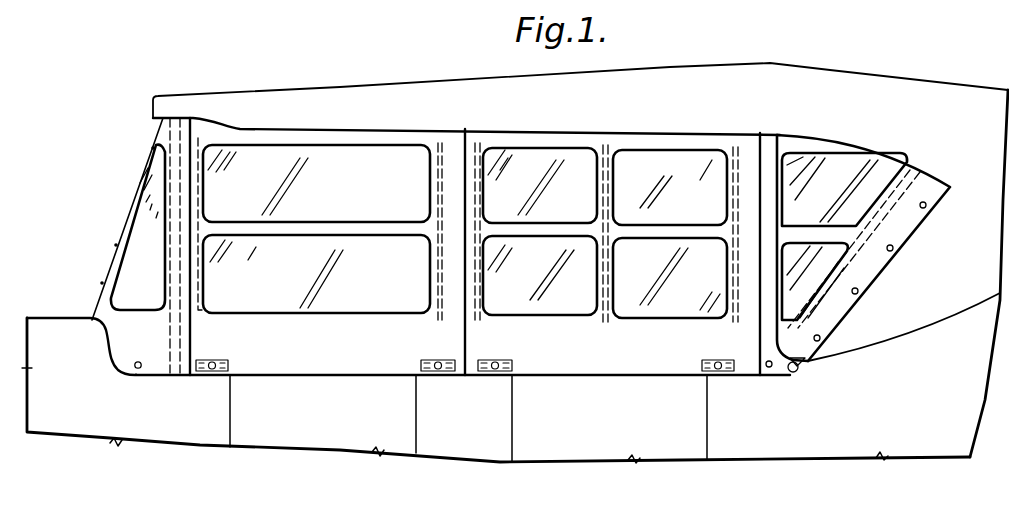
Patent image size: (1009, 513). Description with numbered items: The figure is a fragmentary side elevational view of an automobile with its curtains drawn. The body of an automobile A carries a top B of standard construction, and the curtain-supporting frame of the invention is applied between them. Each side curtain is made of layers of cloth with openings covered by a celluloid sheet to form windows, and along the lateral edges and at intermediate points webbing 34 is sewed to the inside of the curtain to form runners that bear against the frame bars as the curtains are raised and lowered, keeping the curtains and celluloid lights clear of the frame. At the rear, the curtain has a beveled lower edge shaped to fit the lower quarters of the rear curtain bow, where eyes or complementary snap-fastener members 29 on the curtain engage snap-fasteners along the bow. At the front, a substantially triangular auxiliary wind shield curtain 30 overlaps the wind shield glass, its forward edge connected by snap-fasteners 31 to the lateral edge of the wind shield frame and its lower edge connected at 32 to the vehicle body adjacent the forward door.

The complementary snap-fastener members 29 is at (923, 209).
The auxiliary wind shield curtain 30 is at (133, 293).
The snap-fasteners 31 is at (130, 208).
The lower edge connection 32 is at (138, 370).
The webbing 34 is at (600, 320).
The body of an automobile A is at (536, 440).
The top B is at (793, 81).